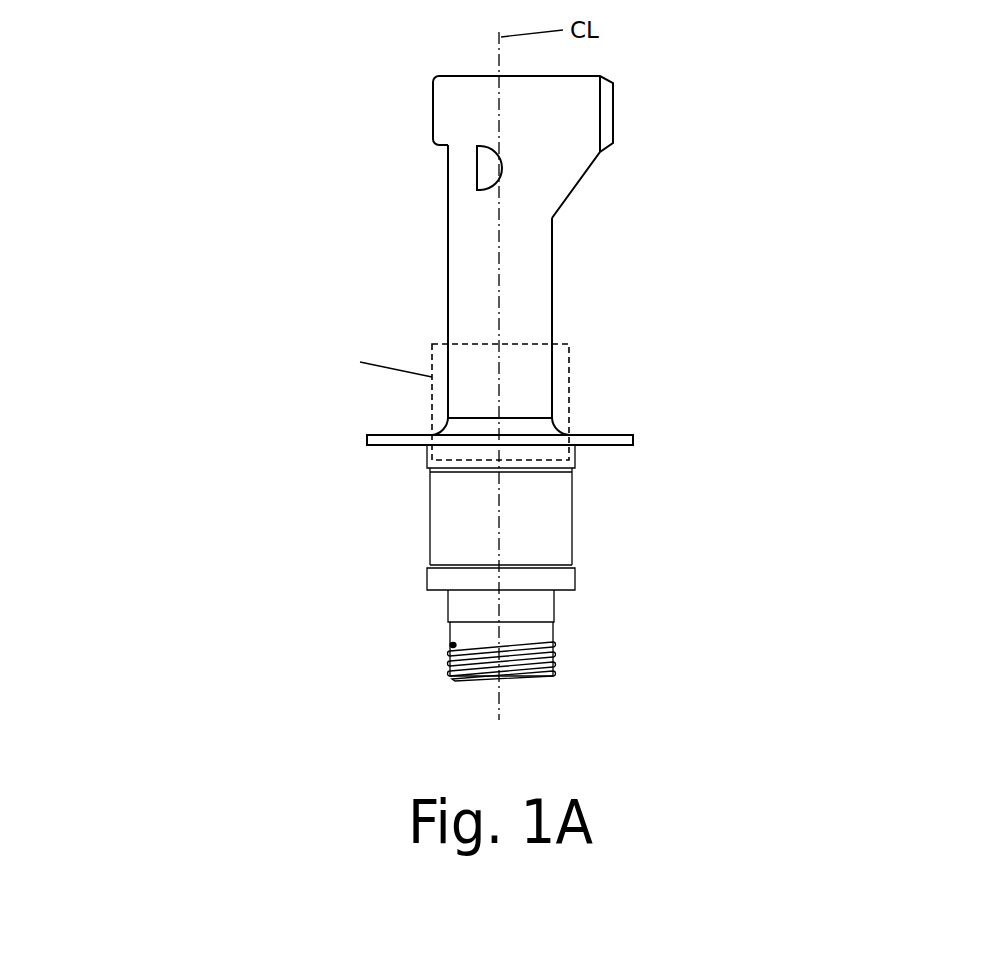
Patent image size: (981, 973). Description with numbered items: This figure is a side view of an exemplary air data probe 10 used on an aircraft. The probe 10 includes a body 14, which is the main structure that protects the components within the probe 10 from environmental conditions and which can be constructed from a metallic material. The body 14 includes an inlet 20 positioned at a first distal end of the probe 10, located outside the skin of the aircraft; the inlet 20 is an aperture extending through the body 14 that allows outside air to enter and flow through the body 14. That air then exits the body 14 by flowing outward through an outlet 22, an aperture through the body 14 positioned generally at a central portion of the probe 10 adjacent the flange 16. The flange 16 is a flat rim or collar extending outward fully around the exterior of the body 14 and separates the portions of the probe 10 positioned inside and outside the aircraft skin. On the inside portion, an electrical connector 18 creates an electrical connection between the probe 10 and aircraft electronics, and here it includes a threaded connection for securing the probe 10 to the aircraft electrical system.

The probe 10 is at (197, 134).
The body 14 is at (440, 240).
The flange 16 is at (622, 438).
The electrical connector 18 is at (465, 677).
The inlet 20 is at (433, 107).
The outlet 22 is at (553, 382).